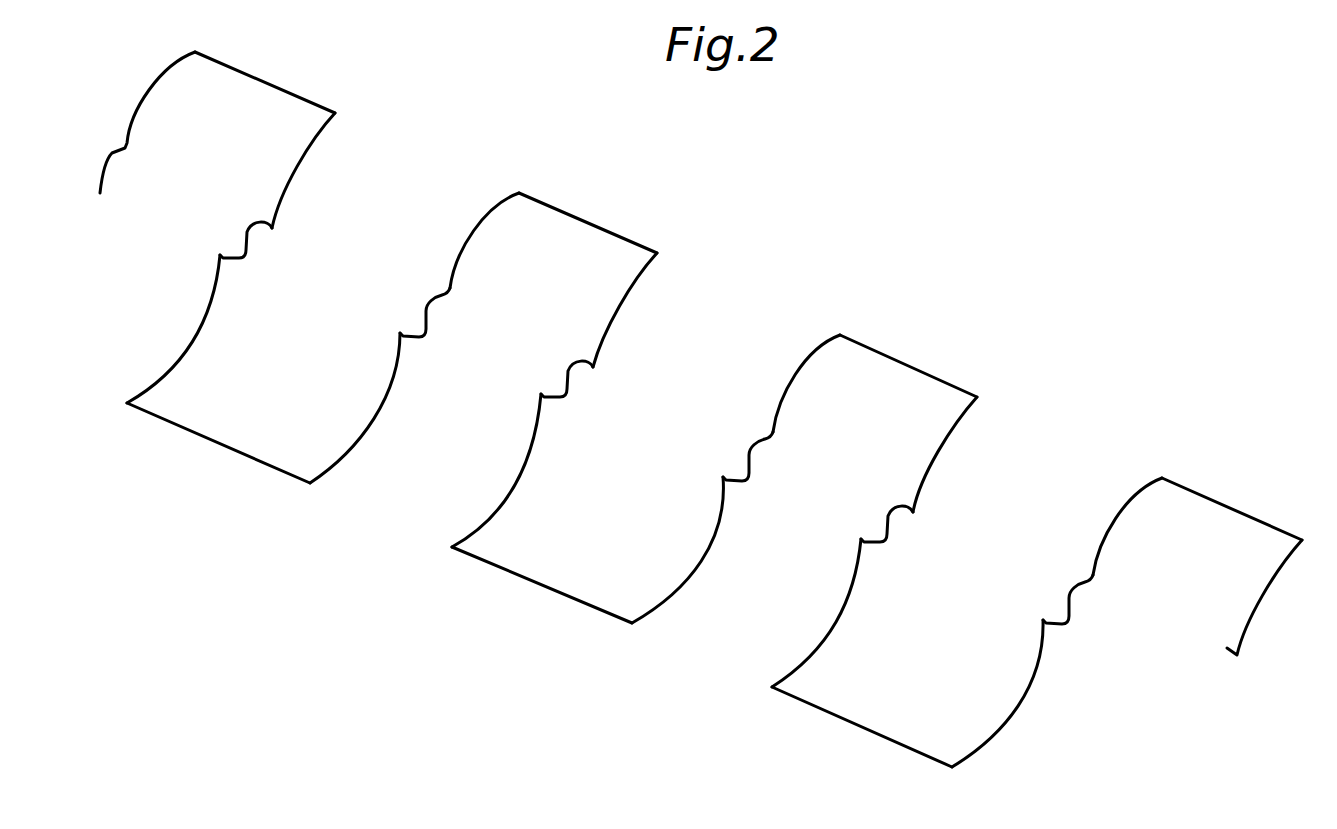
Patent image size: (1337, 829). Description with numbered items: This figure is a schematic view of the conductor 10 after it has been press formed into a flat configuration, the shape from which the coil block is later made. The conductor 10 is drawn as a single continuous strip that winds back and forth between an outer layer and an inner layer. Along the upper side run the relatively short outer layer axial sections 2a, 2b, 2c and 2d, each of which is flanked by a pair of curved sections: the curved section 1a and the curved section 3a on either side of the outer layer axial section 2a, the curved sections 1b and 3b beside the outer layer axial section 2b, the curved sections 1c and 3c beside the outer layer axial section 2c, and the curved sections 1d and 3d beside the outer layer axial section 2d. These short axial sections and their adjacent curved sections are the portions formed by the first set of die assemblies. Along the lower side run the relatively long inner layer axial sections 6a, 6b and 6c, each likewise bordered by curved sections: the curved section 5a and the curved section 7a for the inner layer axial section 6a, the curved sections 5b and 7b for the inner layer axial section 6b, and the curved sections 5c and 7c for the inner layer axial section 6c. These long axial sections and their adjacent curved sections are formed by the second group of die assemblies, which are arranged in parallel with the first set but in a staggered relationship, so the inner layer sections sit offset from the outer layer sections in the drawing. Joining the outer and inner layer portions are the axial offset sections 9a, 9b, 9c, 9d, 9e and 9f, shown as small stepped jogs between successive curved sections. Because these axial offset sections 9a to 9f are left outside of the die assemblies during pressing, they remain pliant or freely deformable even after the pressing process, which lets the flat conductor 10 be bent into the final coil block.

The curved section 1a is at (133, 105).
The outer layer axial section 2a is at (297, 93).
The curved section 3a is at (293, 165).
The axial offset section 9a is at (243, 257).
The curved section 5a is at (188, 345).
The inner layer axial section 6a is at (257, 462).
The curved section 7a is at (373, 425).
The axial offset section 9b is at (430, 317).
The curved section 1b is at (468, 233).
The outer layer axial section 2b is at (613, 235).
The curved section 3b is at (615, 308).
The axial offset section 9c is at (570, 393).
The curved section 5b is at (512, 488).
The inner layer axial section 6b is at (565, 597).
The curved section 7b is at (693, 572).
The axial offset section 9d is at (748, 453).
The curved section 1c is at (788, 373).
The outer layer axial section 2c is at (943, 378).
The curved section 3c is at (937, 448).
The axial offset section 9e is at (887, 537).
The curved section 5c is at (828, 638).
The inner layer axial section 6c is at (860, 728).
The curved section 7c is at (1023, 703).
The axial offset section 9f is at (1068, 603).
The curved section 1d is at (1108, 520).
The outer layer axial section 2d is at (1260, 517).
The curved section 3d is at (1257, 598).
The conductor 10 is at (832, 273).